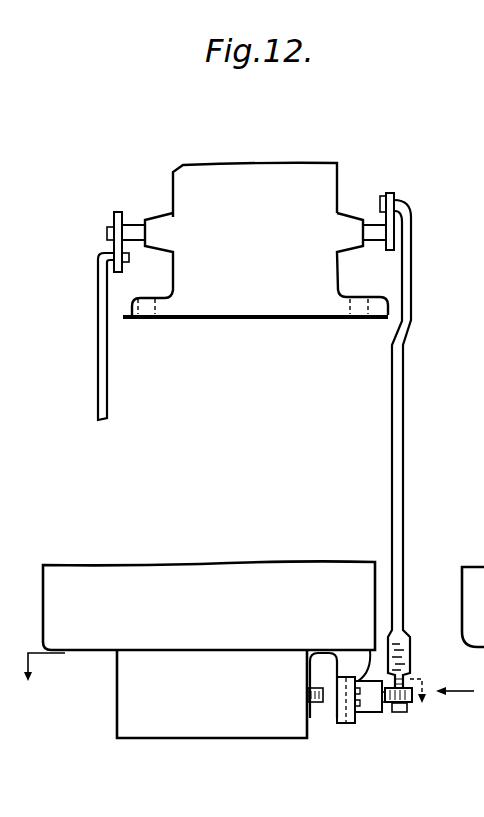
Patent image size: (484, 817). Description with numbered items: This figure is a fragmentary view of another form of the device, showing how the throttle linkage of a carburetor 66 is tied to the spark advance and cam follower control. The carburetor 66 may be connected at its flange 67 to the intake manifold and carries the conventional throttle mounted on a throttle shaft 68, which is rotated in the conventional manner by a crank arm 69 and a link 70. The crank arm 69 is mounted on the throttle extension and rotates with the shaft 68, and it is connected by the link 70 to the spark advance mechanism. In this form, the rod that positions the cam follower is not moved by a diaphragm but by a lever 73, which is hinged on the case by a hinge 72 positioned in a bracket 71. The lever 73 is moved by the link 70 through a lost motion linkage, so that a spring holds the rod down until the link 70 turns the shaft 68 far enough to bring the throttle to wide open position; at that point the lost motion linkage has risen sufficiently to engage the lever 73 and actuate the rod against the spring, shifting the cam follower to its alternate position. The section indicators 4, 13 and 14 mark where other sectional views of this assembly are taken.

The section line 4- 4 is at (44, 680).
The section line 13- 13 is at (444, 688).
The section line 14- 14 is at (426, 730).
The carburetor 66 is at (266, 207).
The flange 67 is at (132, 319).
The throttle shaft 68 is at (131, 226).
The crank arm 69 is at (121, 212).
The link 70 is at (97, 297).
The bracket 71 is at (341, 658).
The hinge 72 is at (370, 648).
The lever 73 is at (383, 713).